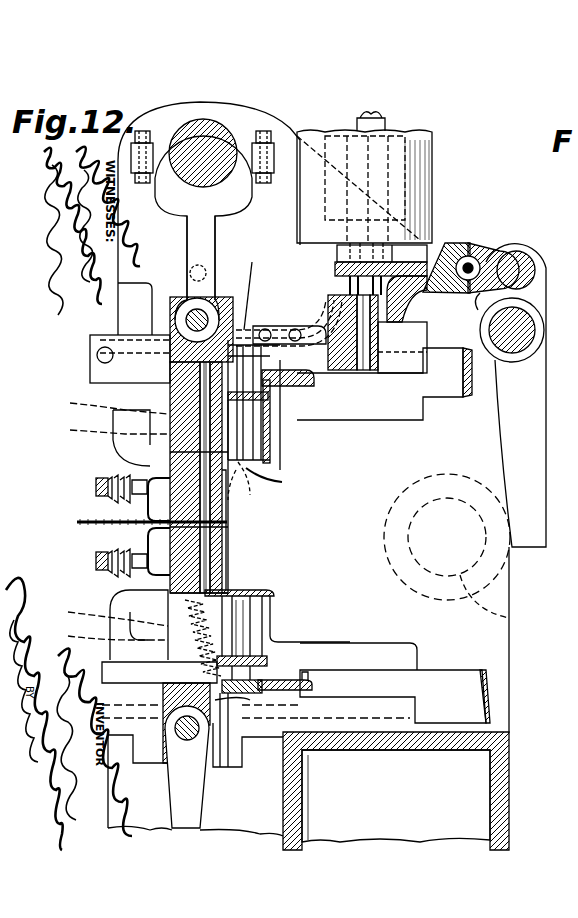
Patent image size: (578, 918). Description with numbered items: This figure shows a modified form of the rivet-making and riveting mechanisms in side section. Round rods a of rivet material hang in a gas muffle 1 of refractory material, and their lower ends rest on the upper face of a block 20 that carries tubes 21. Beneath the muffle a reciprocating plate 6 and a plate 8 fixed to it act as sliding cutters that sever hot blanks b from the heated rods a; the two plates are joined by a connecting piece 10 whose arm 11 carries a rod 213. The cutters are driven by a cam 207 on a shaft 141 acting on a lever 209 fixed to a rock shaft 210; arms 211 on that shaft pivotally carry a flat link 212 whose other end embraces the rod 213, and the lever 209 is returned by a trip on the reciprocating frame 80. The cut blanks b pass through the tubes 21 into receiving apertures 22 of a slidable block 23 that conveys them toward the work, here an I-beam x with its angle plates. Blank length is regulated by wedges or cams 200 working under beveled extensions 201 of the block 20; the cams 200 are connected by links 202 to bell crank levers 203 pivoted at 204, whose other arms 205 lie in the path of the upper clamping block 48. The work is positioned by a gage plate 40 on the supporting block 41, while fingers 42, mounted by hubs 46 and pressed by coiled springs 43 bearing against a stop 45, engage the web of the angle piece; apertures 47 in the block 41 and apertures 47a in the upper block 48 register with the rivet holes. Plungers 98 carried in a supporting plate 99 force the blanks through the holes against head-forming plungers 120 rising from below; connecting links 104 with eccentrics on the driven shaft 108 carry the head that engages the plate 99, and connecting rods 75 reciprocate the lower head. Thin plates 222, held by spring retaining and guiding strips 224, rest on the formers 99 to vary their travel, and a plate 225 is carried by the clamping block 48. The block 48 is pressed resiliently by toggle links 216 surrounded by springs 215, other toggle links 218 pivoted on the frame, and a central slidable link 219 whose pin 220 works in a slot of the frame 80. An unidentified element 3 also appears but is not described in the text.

The gas muffle 1 is at (435, 190).
The round rods a is at (371, 112).
The casing 3 is at (222, 522).
The plate 6 is at (335, 268).
The plate 8 is at (350, 290).
The connecting piece 10 is at (420, 292).
The arms 11 is at (444, 250).
The supporting block 20 is at (328, 298).
The tubes 21 is at (402, 347).
The receiving apertures 22 is at (170, 336).
The slidable block 23 is at (130, 359).
The alining or gage plate 40 is at (214, 556).
The supporting block 41 is at (168, 580).
The fingers 42 is at (146, 509).
The coiled springs 43 is at (96, 482).
The stop 45 is at (108, 490).
The hubs 46 is at (170, 470).
The apertures 47 is at (230, 578).
The apertures 47a is at (262, 520).
The upper clamping block 48 is at (172, 470).
The connecting rods 75 is at (177, 814).
The three-sided rectangular frame 80 is at (450, 398).
The plungers 98 is at (272, 455).
The supporting plate 99 is at (290, 418).
The connecting links 104 is at (187, 230).
The driven shaft 108 is at (226, 133).
The plungers 120 is at (258, 618).
The shaft 141 is at (508, 590).
The slidable wedges or cams 200 is at (281, 302).
The beveled bearings or extensions 201 is at (285, 301).
The pivotal links 202 is at (289, 320).
The bell crank levers 203 is at (272, 438).
The pivot 204 is at (256, 484).
The other arms 205 is at (238, 508).
The cam 207 is at (500, 600).
The lever 209 is at (540, 542).
The rock shaft 210 is at (536, 320).
The arms 211 is at (536, 271).
The flat link 212 is at (486, 256).
The rod 213 is at (466, 256).
The springs 215 is at (118, 529).
The toggle links 216 is at (118, 508).
The toggle links 218 is at (190, 279).
The central slidable link 219 is at (128, 345).
The pin 220 is at (97, 356).
The thin plates 222 is at (252, 280).
The spring retaining and guiding strips 224 is at (318, 386).
The plate 225 is at (284, 480).
The rivet blanks b is at (168, 464).
The I-beam x is at (248, 540).